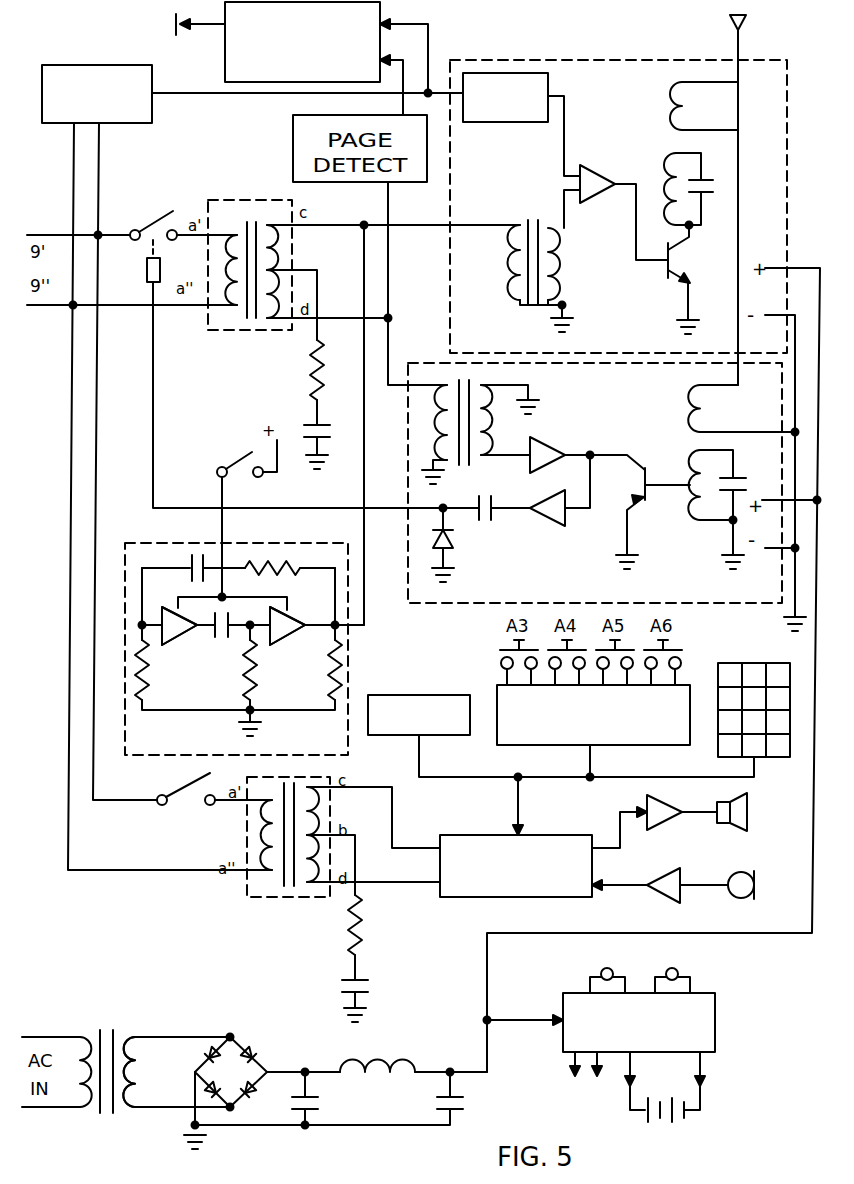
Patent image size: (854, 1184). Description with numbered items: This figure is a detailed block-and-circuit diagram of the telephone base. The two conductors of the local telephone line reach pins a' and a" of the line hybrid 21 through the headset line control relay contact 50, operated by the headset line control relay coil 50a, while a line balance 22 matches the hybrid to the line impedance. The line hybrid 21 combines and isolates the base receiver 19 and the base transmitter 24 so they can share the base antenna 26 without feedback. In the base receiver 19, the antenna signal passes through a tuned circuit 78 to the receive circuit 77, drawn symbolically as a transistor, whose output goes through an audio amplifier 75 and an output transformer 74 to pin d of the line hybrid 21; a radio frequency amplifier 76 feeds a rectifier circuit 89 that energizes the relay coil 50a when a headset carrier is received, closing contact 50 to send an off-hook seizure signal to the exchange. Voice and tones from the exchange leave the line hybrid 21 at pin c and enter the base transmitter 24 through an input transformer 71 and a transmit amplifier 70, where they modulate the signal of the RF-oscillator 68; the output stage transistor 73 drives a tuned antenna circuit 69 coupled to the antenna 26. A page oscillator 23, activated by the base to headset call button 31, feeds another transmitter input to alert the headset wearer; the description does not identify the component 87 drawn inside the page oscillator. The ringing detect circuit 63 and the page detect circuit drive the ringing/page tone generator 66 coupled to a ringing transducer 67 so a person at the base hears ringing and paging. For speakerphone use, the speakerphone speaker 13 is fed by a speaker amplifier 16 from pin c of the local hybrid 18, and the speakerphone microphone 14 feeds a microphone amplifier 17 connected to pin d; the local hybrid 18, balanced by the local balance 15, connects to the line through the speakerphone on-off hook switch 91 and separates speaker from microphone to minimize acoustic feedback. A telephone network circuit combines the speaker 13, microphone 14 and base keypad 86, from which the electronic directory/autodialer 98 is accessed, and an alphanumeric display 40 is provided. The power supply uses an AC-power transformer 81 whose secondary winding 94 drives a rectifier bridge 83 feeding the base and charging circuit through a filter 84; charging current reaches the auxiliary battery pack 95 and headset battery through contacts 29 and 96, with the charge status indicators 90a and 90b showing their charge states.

The ringing/page tone generator 66 is at (225, 68).
The ringing transducer 67 is at (172, 26).
The ringing detect circuit 63 is at (153, 104).
The base transmitter 24 is at (521, 58).
The base antenna 26 is at (727, 30).
The RF-oscillator 68 is at (497, 122).
The tuned antenna circuit 69 is at (674, 145).
The transmit amplifier 70 is at (599, 205).
The input transformer 71 is at (526, 218).
The transistor 73 is at (662, 276).
The line hybrid 21 is at (242, 203).
The headset line control relay contact 50 is at (164, 222).
The headset line control relay coil 50a is at (148, 268).
The line balance 22 is at (300, 398).
The base to headset call button 31 is at (236, 460).
The page oscillator 23 is at (187, 546).
The amplifiers 87 is at (206, 660).
The base receiver 19 is at (466, 612).
The output transformer 74 is at (477, 456).
The audio amplifier 75 is at (546, 442).
The radio frequency amplifier 76 is at (540, 528).
The receive circuit 77 is at (648, 507).
The tuned circuit 78 is at (691, 444).
The rectifier circuit 89 is at (461, 536).
The alphanumeric display 40 is at (418, 694).
The electronic directory/autodialer 98 is at (495, 736).
The base keypad 86 is at (760, 663).
The speaker amplifier 16 is at (664, 822).
The speakerphone speaker 13 is at (750, 827).
The microphone amplifier 17 is at (658, 892).
The speakerphone microphone 14 is at (757, 883).
The speakerphone on-off hook switch 91 is at (174, 796).
The local hybrid 18 is at (263, 902).
The local balance 15 is at (342, 964).
The AC-power transformer 81 is at (108, 1032).
The secondary winding 94 is at (137, 1070).
The rectifier bridge 83 is at (231, 1062).
The filter 84 is at (394, 1098).
The contacts 96 is at (662, 1072).
The charge status indicator 90a is at (603, 968).
The charge status indicator 90b is at (668, 968).
The contacts 29 is at (586, 1074).
The auxiliary battery pack 95 is at (664, 1126).